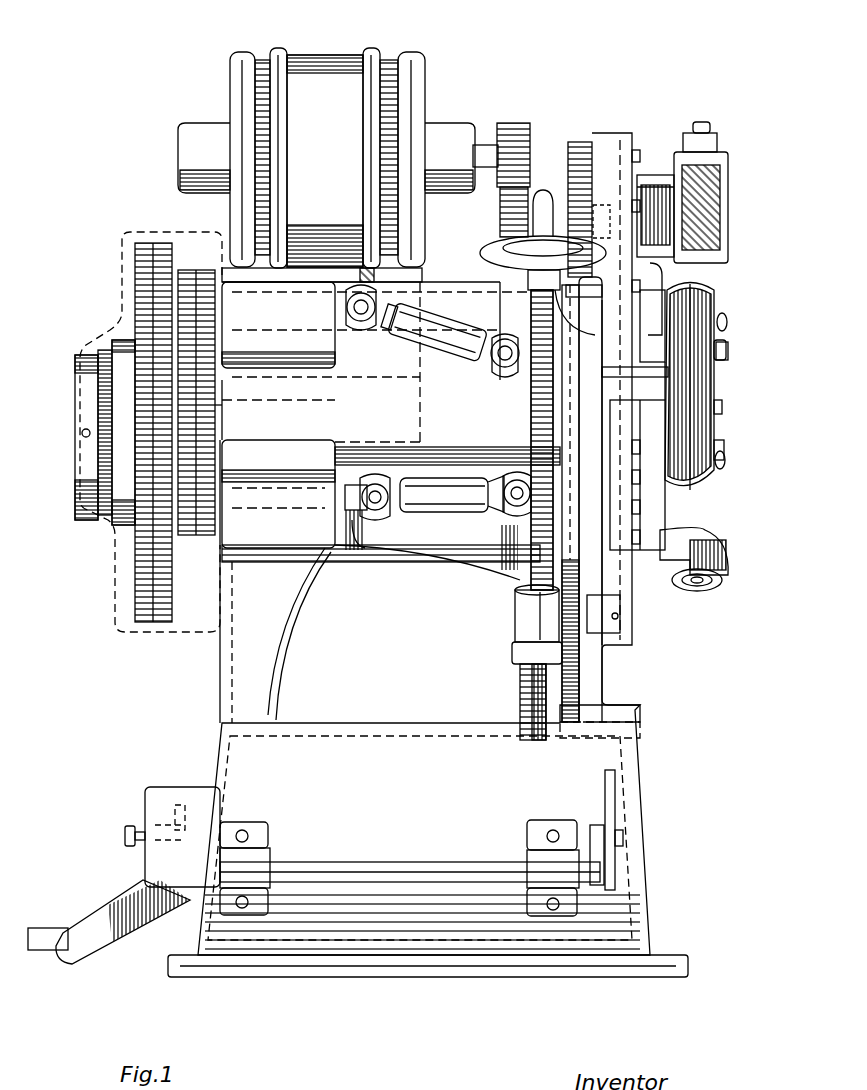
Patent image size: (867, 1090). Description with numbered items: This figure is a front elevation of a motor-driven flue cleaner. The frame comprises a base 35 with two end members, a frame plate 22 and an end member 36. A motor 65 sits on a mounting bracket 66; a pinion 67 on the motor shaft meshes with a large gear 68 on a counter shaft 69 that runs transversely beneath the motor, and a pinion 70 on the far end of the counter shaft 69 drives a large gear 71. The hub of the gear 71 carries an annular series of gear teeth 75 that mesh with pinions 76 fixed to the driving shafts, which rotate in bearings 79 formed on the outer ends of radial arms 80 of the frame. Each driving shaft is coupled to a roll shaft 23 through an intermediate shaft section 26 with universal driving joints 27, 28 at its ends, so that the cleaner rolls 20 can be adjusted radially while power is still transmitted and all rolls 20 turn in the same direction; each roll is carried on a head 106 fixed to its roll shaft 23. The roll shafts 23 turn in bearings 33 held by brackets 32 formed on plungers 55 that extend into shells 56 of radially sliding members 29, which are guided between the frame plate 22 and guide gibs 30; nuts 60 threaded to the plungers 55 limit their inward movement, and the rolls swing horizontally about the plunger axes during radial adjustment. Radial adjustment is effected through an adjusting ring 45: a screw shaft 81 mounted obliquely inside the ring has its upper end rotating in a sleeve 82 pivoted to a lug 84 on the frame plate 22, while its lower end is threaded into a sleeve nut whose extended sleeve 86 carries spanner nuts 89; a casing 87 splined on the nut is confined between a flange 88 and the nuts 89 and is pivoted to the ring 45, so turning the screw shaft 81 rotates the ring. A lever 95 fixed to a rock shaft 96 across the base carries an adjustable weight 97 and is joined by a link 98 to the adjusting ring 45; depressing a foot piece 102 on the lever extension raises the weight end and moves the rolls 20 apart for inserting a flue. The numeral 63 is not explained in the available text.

The cleaner roll 20 is at (708, 320).
The frame plate 22 is at (598, 674).
The roll shaft 23 is at (728, 352).
The intermediate shaft section 26 is at (450, 330).
The universal driving joint 27 is at (498, 522).
The universal driving joint 28 is at (370, 548).
The radially sliding member 29 is at (660, 582).
The guide gib 30 is at (630, 150).
The bracket 32 is at (658, 310).
The bearing 33 is at (648, 440).
The base 35 is at (370, 738).
The end member 36 is at (283, 612).
The adjusting ring 45 is at (578, 150).
The plunger 55 is at (703, 126).
The shell 56 is at (728, 208).
The nut 60 is at (320, 352).
The link 63 is at (595, 320).
The motor 65 is at (316, 70).
The mounting bracket 66 is at (420, 270).
The pinion 67 is at (510, 135).
The large gear 68 is at (505, 220).
The counter shaft 69 is at (125, 287).
The pinion 70 is at (152, 248).
The large gear 71 is at (135, 587).
The gear teeth 75 is at (215, 408).
The pinion 76 is at (198, 280).
The bearing 79 is at (340, 560).
The radial arm 80 is at (278, 439).
The screw shaft 81 is at (533, 412).
The sleeve 82 is at (490, 258).
The lug 84 is at (588, 498).
The extended sleeve 86 is at (525, 690).
The casing 87 is at (515, 632).
The flange 88 is at (520, 598).
The spanner nut 89 is at (512, 652).
The lever 95 is at (100, 900).
The rock shaft 96 is at (438, 870).
The weight 97 is at (172, 785).
The link 98 is at (610, 798).
The foot piece 102 is at (45, 925).
The head 106 is at (720, 320).